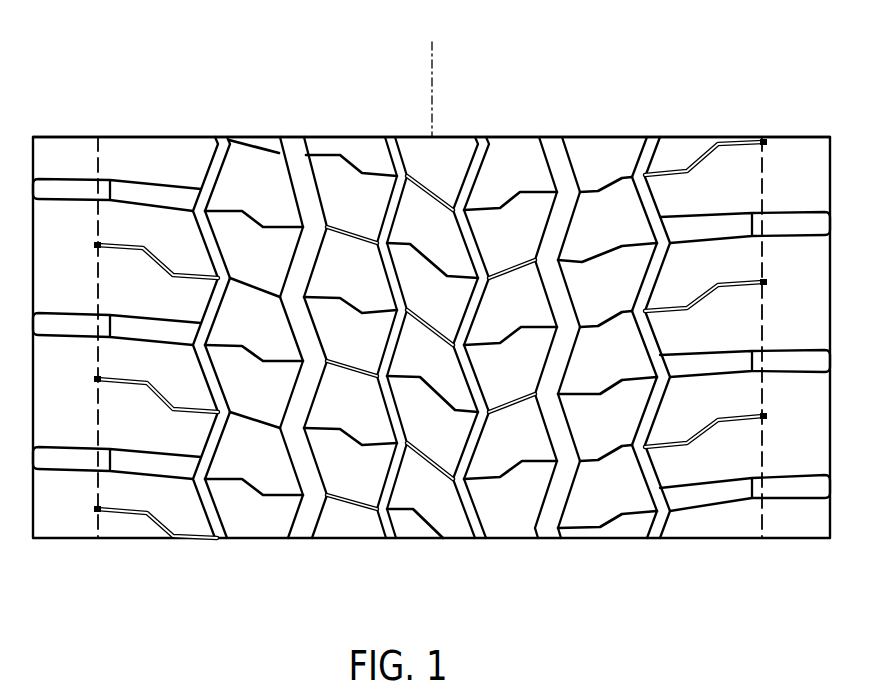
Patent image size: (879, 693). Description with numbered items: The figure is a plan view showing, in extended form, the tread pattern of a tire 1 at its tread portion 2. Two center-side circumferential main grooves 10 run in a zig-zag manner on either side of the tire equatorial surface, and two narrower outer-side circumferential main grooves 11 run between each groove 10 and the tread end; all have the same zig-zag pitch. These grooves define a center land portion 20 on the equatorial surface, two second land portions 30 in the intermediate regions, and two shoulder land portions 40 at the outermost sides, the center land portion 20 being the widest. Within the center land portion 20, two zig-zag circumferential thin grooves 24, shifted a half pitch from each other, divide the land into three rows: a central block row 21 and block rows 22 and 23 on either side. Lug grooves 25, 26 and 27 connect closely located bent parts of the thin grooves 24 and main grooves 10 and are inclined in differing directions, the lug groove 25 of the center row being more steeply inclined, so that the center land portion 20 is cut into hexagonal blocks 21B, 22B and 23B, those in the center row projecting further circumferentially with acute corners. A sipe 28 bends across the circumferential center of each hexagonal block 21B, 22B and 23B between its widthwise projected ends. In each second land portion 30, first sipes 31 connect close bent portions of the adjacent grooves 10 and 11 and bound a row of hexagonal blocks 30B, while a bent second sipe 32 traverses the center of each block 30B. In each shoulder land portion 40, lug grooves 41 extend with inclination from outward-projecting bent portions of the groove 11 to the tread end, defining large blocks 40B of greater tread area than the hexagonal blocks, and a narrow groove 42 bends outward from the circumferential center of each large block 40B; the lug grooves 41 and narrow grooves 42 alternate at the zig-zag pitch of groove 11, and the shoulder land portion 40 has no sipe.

The tire 1 is at (431, 287).
The tread portion 2 is at (431, 288).
The center-side circumferential main groove 10 is at (430, 294).
The outer-side circumferential main groove 11 is at (431, 294).
The center land portion 20 is at (431, 74).
The block row 21 is at (437, 330).
The hexagonal block 21B is at (453, 511).
The block row 22 is at (354, 330).
The hexagonal block 22B is at (372, 529).
The block row 23 is at (519, 331).
The hexagonal block 23B is at (535, 481).
The circumferential thin groove 24 is at (428, 304).
The lug groove 25 is at (425, 391).
The lug groove 26 is at (345, 417).
The lug groove 27 is at (506, 433).
The sipe 28 is at (430, 312).
The second land portion 30 is at (431, 317).
The hexagonal block 30B is at (437, 362).
The sipe 31 is at (416, 518).
The sipe 32 is at (431, 308).
The shoulder land portion 40 is at (431, 317).
The large block 40B is at (431, 382).
The lug groove 41 is at (430, 536).
The narrow groove 42 is at (430, 313).